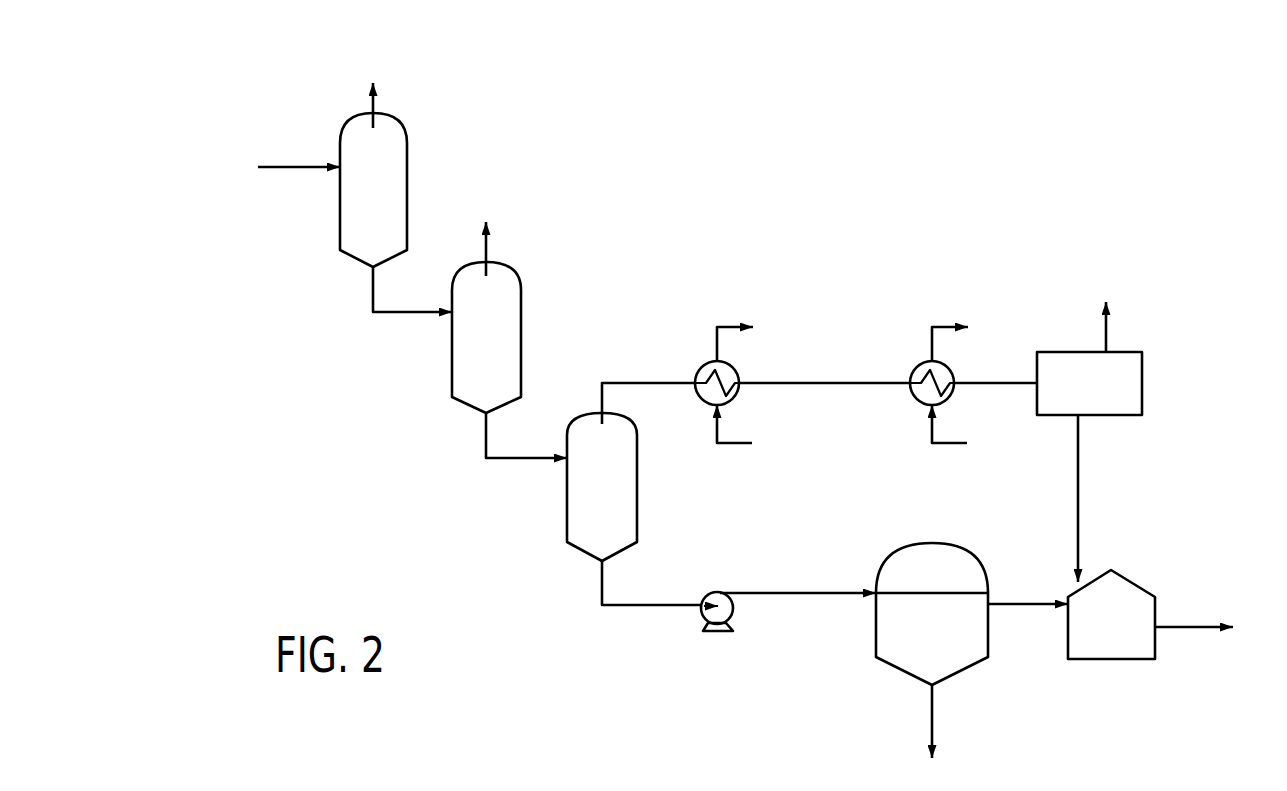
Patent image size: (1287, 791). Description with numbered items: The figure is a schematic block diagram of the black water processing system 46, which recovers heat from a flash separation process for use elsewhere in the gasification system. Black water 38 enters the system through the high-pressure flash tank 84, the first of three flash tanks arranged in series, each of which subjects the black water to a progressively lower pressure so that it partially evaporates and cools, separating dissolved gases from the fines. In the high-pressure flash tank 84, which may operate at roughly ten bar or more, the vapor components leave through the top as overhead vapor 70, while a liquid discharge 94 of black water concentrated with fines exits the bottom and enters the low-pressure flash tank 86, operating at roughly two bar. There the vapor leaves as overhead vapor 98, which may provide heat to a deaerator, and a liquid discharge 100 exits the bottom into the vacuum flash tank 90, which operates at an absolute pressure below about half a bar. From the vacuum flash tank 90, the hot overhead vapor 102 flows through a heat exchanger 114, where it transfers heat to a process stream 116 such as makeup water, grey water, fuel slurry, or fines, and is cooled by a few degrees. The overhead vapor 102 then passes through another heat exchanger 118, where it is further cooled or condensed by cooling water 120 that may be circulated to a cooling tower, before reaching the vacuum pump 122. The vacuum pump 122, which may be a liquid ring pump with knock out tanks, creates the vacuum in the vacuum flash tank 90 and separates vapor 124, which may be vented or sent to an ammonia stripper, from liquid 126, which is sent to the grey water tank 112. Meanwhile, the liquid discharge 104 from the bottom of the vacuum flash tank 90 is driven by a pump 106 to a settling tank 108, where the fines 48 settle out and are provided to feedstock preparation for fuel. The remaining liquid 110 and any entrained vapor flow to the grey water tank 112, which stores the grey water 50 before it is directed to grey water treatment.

The black water processing system 46 is at (256, 100).
The black water 38 is at (296, 198).
The overhead vapor 70 is at (372, 110).
The high-pressure flash tank 84 is at (400, 136).
The liquid discharge 94 is at (373, 295).
The low-pressure flash tank 86 is at (515, 284).
The overhead vapor 98 is at (487, 252).
The liquid discharge 100 is at (486, 440).
The vacuum flash tank 90 is at (633, 430).
The overhead vapor 102 is at (602, 402).
The heat exchanger 114 is at (702, 368).
The process stream 116 is at (728, 325).
The heat exchanger 118 is at (913, 367).
The cooling water 120 is at (943, 325).
The vacuum pump 122 is at (1145, 387).
The vapor 124 is at (1108, 332).
The liquid 126 is at (1080, 498).
The liquid discharge 104 is at (602, 586).
The pump 106 is at (712, 592).
The settling tank 108 is at (904, 568).
The fines 48 is at (932, 714).
The remaining liquid 110 is at (1022, 600).
The grey water tank 112 is at (1133, 584).
The grey water 50 is at (1190, 626).